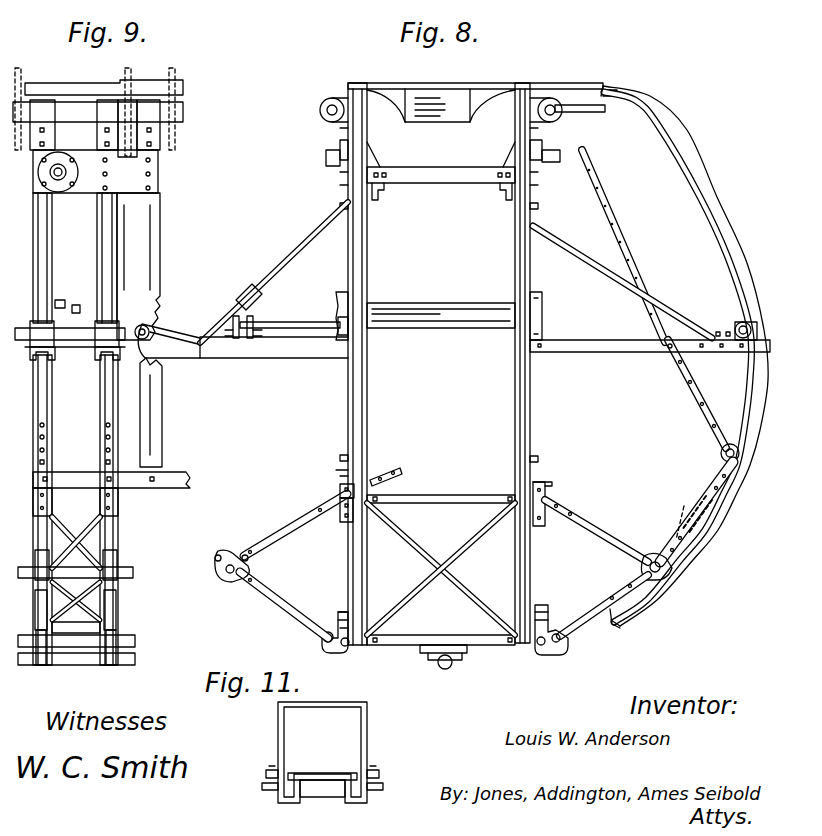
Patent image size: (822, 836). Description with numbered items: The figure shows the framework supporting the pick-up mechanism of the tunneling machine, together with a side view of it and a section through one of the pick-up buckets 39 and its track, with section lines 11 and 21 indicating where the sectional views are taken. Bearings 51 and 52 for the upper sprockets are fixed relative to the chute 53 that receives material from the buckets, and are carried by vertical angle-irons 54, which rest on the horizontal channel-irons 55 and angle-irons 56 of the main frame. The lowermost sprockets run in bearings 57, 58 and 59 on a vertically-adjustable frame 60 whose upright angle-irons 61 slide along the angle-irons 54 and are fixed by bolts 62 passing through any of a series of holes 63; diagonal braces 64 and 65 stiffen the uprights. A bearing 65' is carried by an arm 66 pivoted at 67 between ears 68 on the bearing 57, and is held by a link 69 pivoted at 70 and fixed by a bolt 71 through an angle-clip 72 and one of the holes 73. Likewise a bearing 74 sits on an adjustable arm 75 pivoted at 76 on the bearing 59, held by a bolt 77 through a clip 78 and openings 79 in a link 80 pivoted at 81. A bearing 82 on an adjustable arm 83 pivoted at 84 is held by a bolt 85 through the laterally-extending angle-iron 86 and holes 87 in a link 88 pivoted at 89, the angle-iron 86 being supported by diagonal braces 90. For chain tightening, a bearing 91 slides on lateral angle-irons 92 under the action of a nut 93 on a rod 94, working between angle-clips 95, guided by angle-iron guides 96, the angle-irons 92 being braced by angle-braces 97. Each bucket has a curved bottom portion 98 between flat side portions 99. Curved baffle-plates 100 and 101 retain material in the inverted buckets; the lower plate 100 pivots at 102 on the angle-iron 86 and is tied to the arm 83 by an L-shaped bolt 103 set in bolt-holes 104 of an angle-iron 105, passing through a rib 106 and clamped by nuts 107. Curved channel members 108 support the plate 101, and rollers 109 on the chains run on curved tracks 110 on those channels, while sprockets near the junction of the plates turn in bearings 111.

In FIG. 8, the section line 11 is at (725, 124).
In FIG. 8, the section line 21 is at (663, 544).
In FIG. 11, the pick-up bucket 39 is at (274, 738).
In FIG. 8, the bearing 51 is at (560, 100).
In FIG. 8, the bearing 52 is at (320, 110).
In FIG. 8, the chute 53 is at (433, 90).
In FIG. 8, the vertical angle-iron 54 is at (517, 110).
In FIG. 8, the horizontal channel-iron 55 is at (340, 297).
In FIG. 8, the angle-iron 56 is at (352, 480).
In FIG. 9, the bearing 57 is at (46, 645).
In FIG. 8, the bearing 57 is at (345, 636).
In FIG. 9, the bearing 58 is at (112, 652).
In FIG. 8, the bearing 58 is at (450, 644).
In FIG. 8, the bearing 59 is at (548, 642).
In FIG. 8, the vertically-adjustable frame 60 is at (344, 556).
In FIG. 8, the upright angle-iron 61 is at (372, 575).
In FIG. 9, the bolt 62 is at (104, 468).
In FIG. 8, the bolt 62 is at (352, 208).
In FIG. 9, the holes 63 is at (104, 437).
In FIG. 8, the diagonal brace 64 is at (478, 523).
In FIG. 9, the diagonal brace 65 is at (76, 542).
In FIG. 9, the bearing 65' is at (111, 578).
In FIG. 8, the bearing 65' is at (236, 551).
In FIG. 8, the arm 66 is at (272, 606).
In FIG. 8, the pivot 67 is at (330, 646).
In FIG. 8, the lug or ear 68 is at (326, 631).
In FIG. 8, the link 69 is at (286, 526).
In FIG. 8, the pivot 70 is at (246, 555).
In FIG. 8, the bolt 71 is at (342, 518).
In FIG. 8, the angle-clip 72 is at (342, 488).
In FIG. 8, the holes 73 is at (398, 478).
In FIG. 8, the bearing 74 is at (655, 560).
In FIG. 8, the adjustable arm 75 is at (592, 616).
In FIG. 8, the pivot 76 is at (566, 648).
In FIG. 8, the bolt 77 is at (548, 506).
In FIG. 8, the clip 78 is at (548, 492).
In FIG. 8, the openings 79 is at (560, 522).
In FIG. 8, the link 80 is at (600, 546).
In FIG. 8, the pivot 81 is at (642, 560).
In FIG. 8, the bearing 82 is at (720, 453).
In FIG. 8, the adjustable arm 83 is at (716, 512).
In FIG. 8, the pivot 84 is at (686, 572).
In FIG. 8, the bolt 85 is at (667, 349).
In FIG. 8, the laterally-extending angle-iron 86 is at (590, 344).
In FIG. 8, the holes 87 is at (641, 276).
In FIG. 8, the link 88 is at (686, 392).
In FIG. 8, the pivot 89 is at (730, 444).
In FIG. 8, the diagonal brace 90 is at (592, 262).
In FIG. 8, the bearing 91 is at (166, 326).
In FIG. 8, the laterally-extending angle-iron 92 is at (290, 340).
In FIG. 8, the nut 93 is at (258, 300).
In FIG. 8, the bolt or rod 94 is at (312, 330).
In FIG. 8, the angle-clip 95 is at (250, 340).
In FIG. 9, the angle-iron guide 96 is at (100, 360).
In FIG. 8, the angle-brace 97 is at (276, 262).
In FIG. 11, the curved bottom portion 98 is at (343, 702).
In FIG. 11, the flat side portion 99 is at (360, 742).
In FIG. 8, the lower baffle-plate 100 is at (766, 386).
In FIG. 8, the upper baffle-plate 101 is at (684, 122).
In FIG. 11, the upper baffle-plate 101 is at (330, 771).
In FIG. 8, the pivot 102 is at (762, 346).
In FIG. 8, the L-shaped bolt 103 is at (674, 525).
In FIG. 8, the bolt-holes 104 is at (650, 604).
In FIG. 8, the angle-iron 105 is at (616, 622).
In FIG. 8, the rib 106 is at (706, 532).
In FIG. 8, the clamping nut 107 is at (700, 514).
In FIG. 8, the curved channel member 108 is at (592, 104).
In FIG. 11, the curved channel member 108 is at (344, 790).
In FIG. 11, the roller 109 is at (266, 774).
In FIG. 11, the curved track 110 is at (276, 789).
In FIG. 8, the bearing 111 is at (740, 320).